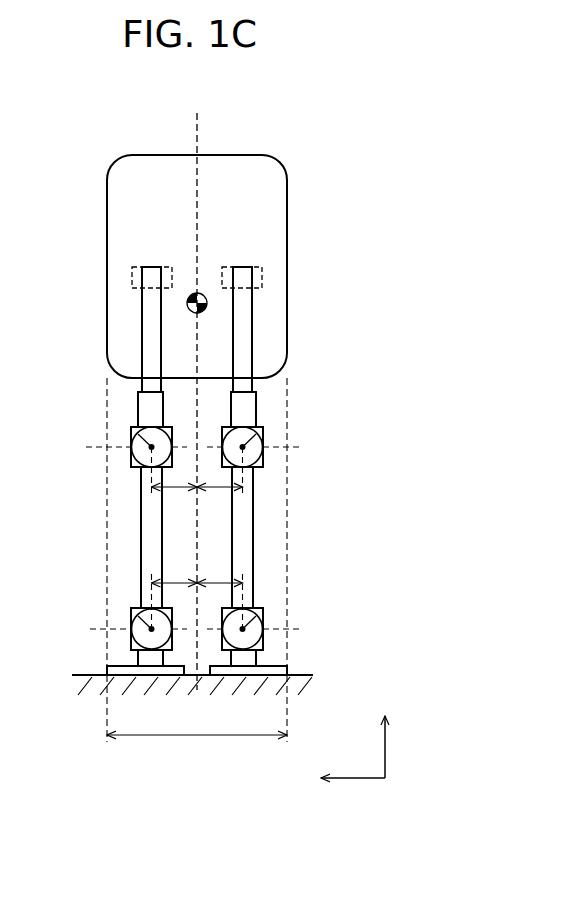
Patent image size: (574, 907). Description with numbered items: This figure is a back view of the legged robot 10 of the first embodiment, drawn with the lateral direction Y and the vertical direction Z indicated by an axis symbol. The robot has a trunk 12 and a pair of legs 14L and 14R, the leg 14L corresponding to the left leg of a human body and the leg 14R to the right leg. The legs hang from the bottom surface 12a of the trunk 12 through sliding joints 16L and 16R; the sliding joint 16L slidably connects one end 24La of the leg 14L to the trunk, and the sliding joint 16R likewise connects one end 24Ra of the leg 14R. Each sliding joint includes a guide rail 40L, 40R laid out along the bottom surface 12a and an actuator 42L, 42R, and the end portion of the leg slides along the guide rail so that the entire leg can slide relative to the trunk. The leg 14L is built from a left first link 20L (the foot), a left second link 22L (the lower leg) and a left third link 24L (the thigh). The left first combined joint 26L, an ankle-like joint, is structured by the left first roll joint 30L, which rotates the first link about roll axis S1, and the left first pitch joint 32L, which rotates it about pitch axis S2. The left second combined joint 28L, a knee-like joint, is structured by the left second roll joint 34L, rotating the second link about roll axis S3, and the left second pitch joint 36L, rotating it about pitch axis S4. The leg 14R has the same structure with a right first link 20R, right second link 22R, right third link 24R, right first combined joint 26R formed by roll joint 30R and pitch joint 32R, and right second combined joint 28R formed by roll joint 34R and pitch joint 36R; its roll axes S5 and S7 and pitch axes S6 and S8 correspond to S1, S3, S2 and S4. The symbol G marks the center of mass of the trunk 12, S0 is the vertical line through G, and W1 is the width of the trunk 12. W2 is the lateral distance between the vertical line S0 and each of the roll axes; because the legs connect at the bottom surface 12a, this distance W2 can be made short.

The legged robot 10 is at (311, 107).
The trunk 12 is at (137, 190).
The bottom surface of the trunk 12a is at (275, 382).
The leg 14L is at (139, 538).
The leg 14R is at (257, 538).
The sliding joint 16L is at (149, 260).
The sliding joint 16R is at (246, 260).
The left first link 20L is at (107, 667).
The right first link 20R is at (287, 667).
The left second link 22L is at (141, 505).
The right second link 22R is at (254, 507).
The left third link 24L is at (138, 407).
The right third link 24R is at (257, 407).
The end portion of the left third link 24La is at (139, 389).
The end portion of the right third link 24Ra is at (258, 391).
The left first combined joint 26L is at (135, 605).
The right first combined joint 26R is at (260, 604).
The left second combined joint 28L is at (130, 471).
The right second combined joint 28R is at (265, 471).
The left first roll joint 30L is at (131, 618).
The right first roll joint 30R is at (263, 617).
The left first pitch joint 32L is at (137, 652).
The right first pitch joint 32R is at (258, 652).
The left second roll joint 34L is at (131, 433).
The right second roll joint 34R is at (263, 433).
The left second pitch joint 36L is at (131, 461).
The right second pitch joint 36R is at (263, 461).
The guide rail 40L is at (142, 315).
The guide rail 40R is at (253, 318).
The actuator 42L is at (131, 277).
The actuator 42R is at (264, 278).
The position of the center of mass G is at (200, 292).
The vertical line S0 is at (197, 387).
The roll axis S1 is at (137, 616).
The pitch axis S2 is at (126, 628).
The roll axis S3 is at (137, 433).
The pitch axis S4 is at (123, 446).
The roll axis S5 is at (257, 616).
The pitch axis S6 is at (266, 630).
The roll axis S7 is at (257, 434).
The pitch axis S8 is at (266, 450).
The width of the trunk W1 is at (197, 721).
The distance W2 is at (217, 578).
The Y axis Y is at (343, 780).
The Z axis Z is at (385, 733).